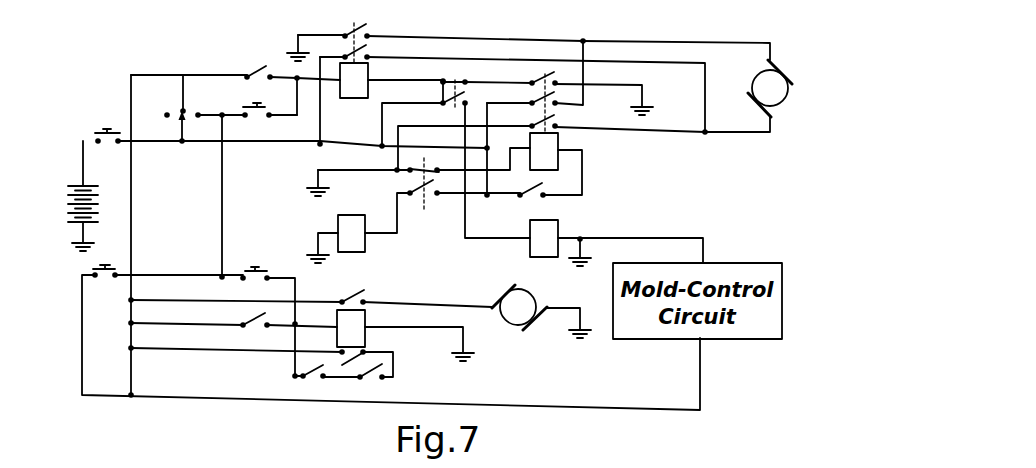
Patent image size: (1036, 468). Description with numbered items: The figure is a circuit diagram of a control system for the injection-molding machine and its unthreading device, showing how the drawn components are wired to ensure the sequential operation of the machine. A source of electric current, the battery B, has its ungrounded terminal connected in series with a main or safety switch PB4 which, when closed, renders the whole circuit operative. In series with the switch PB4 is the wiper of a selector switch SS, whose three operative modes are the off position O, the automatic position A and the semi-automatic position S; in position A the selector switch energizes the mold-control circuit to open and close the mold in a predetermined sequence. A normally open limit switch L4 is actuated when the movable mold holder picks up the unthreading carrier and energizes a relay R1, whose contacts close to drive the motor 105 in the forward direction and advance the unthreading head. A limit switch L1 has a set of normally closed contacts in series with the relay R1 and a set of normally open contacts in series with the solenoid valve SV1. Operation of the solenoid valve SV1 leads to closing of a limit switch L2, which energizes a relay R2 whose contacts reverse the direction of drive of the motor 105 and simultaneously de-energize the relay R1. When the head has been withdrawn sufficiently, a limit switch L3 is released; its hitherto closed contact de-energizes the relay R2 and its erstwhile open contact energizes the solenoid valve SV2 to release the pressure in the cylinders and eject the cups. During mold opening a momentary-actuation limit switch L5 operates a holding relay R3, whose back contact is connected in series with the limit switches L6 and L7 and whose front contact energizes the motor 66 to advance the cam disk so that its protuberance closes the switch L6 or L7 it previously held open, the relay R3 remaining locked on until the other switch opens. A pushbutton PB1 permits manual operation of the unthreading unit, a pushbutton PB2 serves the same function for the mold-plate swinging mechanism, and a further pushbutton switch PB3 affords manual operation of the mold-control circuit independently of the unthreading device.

The limit switch L1 is at (450, 78).
The limit switch L2 is at (545, 197).
The limit switch L3 is at (424, 210).
The limit switch L4 is at (262, 66).
The limit switch L5 is at (256, 318).
The limit switch L6 is at (373, 378).
The limit switch L7 is at (312, 377).
The pushbutton PB1 is at (256, 120).
The pushbutton PB2 is at (243, 272).
The pushbutton switch PB3 is at (97, 266).
The main or safety switch PB4 is at (102, 131).
The relay R1 is at (355, 60).
The relay R2 is at (543, 121).
The holding relay R3 is at (351, 327).
The solenoid valve SV1 is at (530, 250).
The solenoid valve SV2 is at (367, 250).
The selector switch SS is at (182, 143).
The automatic mode position A is at (186, 108).
The off mode position O is at (165, 113).
The semi-automatic mode position S is at (200, 113).
The battery B is at (72, 222).
The motor 66 is at (510, 328).
The motor 105 is at (786, 100).